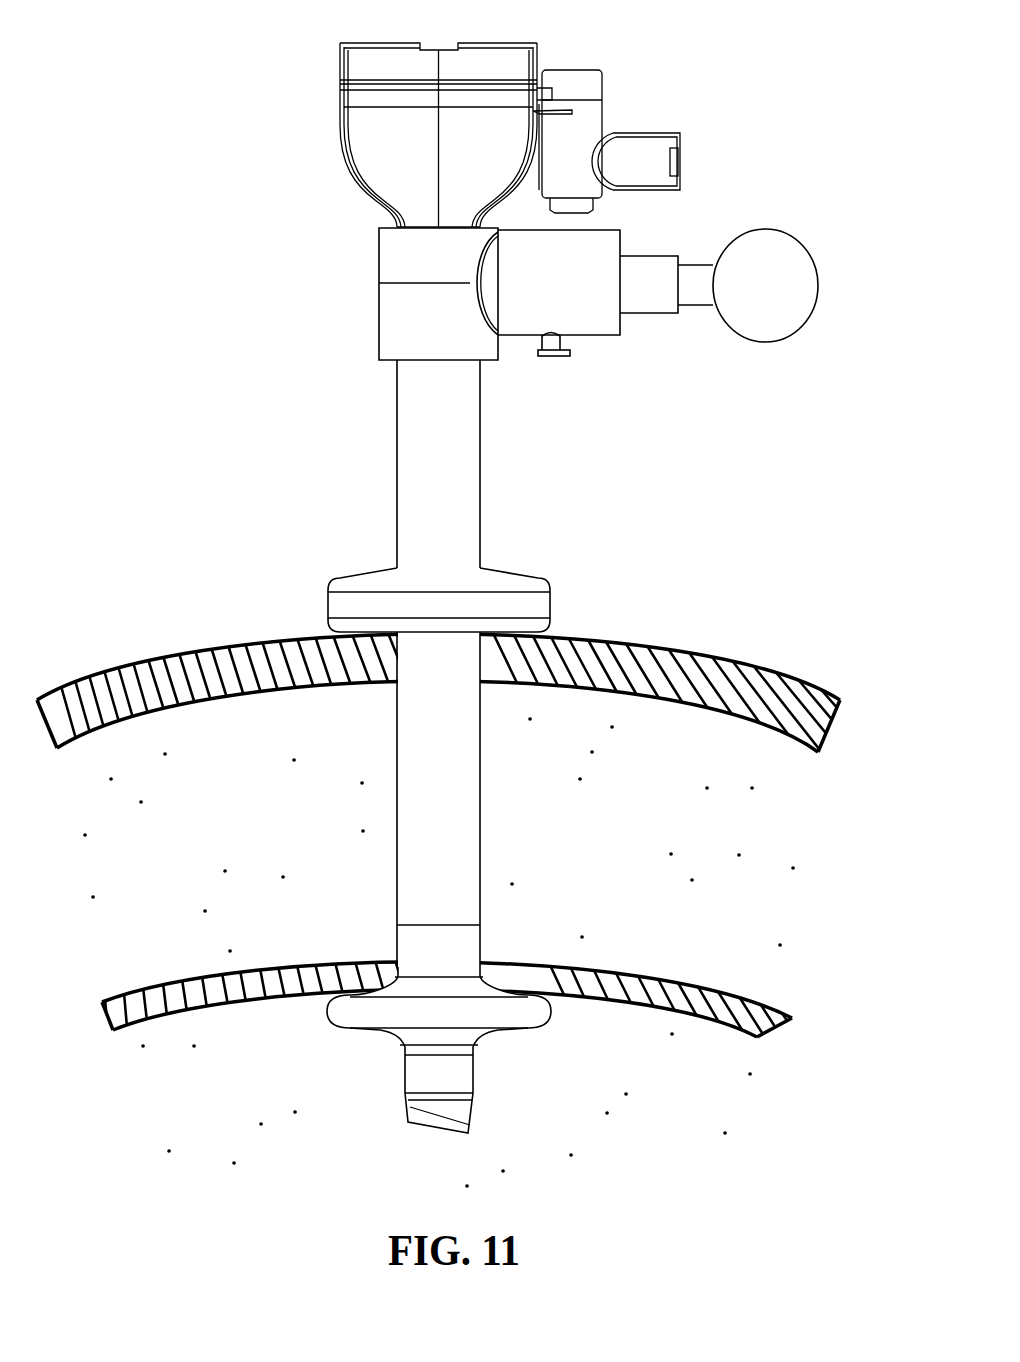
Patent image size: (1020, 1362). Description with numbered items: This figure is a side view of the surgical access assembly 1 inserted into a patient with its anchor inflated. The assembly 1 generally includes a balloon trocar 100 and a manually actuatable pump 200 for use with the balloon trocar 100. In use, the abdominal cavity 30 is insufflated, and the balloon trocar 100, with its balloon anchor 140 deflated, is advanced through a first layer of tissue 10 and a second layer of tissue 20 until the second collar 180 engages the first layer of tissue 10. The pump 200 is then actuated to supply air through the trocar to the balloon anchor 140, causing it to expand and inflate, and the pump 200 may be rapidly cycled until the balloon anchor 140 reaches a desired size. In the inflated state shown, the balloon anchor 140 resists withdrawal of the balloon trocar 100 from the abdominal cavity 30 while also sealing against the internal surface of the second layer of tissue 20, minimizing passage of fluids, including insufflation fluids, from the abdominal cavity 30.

The surgical access assembly 1 is at (609, 625).
The balloon trocar 100 is at (521, 125).
The pump 200 is at (755, 263).
The second collar 180 is at (463, 574).
The first layer of tissue 10 is at (463, 675).
The second layer of tissue 20 is at (450, 990).
The abdominal cavity 30 is at (623, 1058).
The balloon anchor 140 is at (530, 1018).